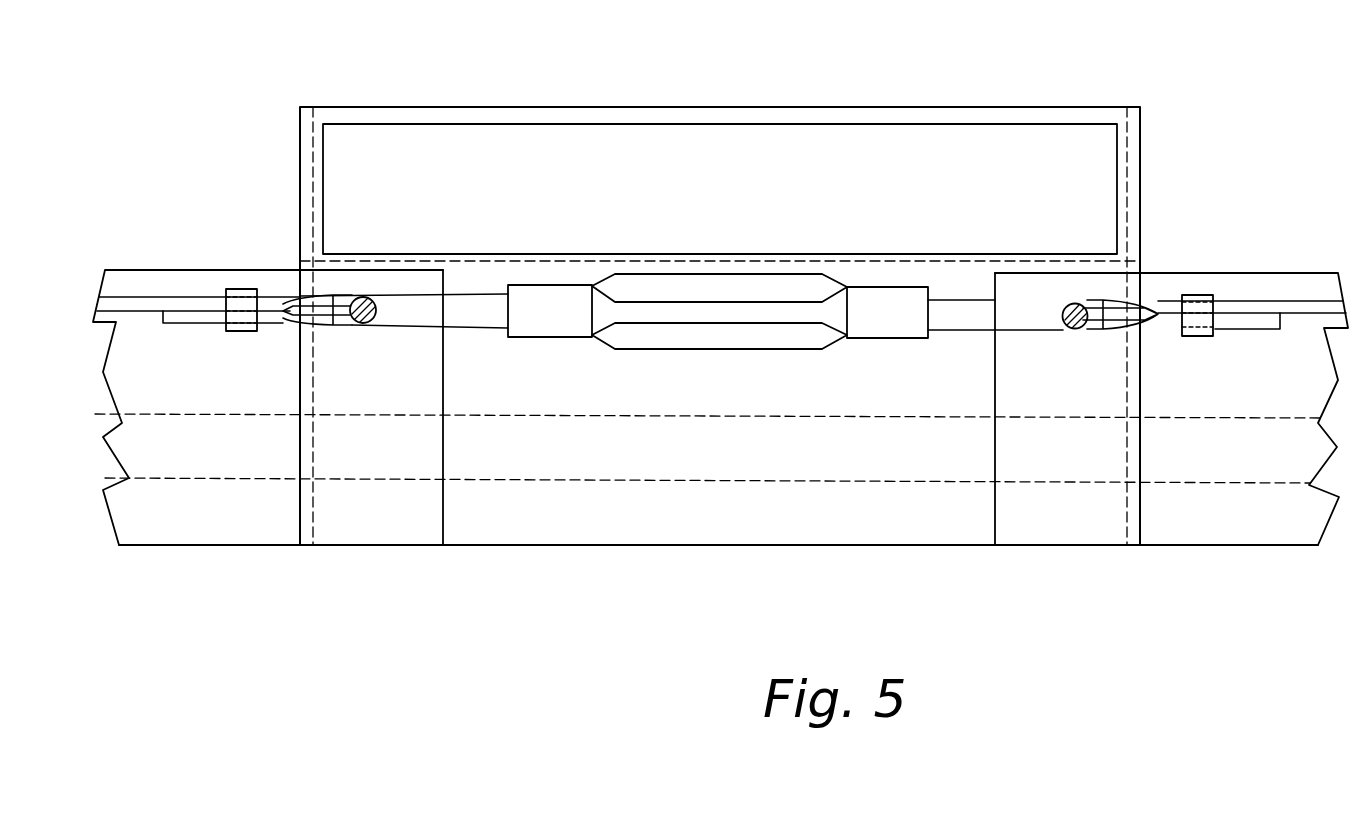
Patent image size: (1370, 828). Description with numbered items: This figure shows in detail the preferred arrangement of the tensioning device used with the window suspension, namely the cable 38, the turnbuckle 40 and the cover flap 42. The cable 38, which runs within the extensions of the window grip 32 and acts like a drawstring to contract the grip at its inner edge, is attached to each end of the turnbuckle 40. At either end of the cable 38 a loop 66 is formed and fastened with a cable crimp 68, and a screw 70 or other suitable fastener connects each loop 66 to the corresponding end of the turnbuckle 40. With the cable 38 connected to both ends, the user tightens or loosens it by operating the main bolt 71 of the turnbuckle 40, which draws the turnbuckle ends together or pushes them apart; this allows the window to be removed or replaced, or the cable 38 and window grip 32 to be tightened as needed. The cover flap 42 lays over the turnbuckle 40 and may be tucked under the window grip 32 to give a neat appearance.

The window grip 32 is at (241, 270).
The cable 38 is at (172, 305).
The turnbuckle 40 is at (672, 214).
The cover flap 42 is at (1143, 132).
The loop 66 is at (275, 318).
The cable crimp 68 is at (237, 330).
The screw 70 is at (362, 325).
The main bolt 71 is at (805, 288).